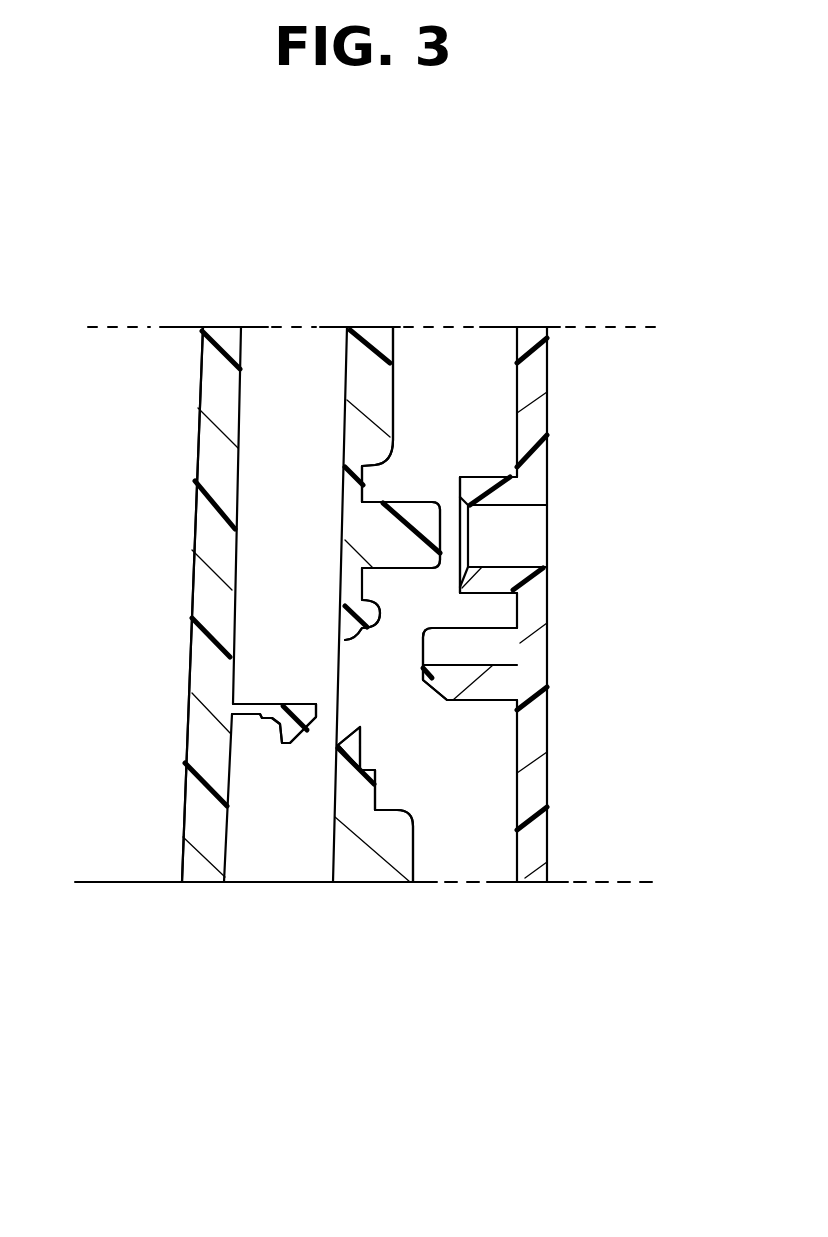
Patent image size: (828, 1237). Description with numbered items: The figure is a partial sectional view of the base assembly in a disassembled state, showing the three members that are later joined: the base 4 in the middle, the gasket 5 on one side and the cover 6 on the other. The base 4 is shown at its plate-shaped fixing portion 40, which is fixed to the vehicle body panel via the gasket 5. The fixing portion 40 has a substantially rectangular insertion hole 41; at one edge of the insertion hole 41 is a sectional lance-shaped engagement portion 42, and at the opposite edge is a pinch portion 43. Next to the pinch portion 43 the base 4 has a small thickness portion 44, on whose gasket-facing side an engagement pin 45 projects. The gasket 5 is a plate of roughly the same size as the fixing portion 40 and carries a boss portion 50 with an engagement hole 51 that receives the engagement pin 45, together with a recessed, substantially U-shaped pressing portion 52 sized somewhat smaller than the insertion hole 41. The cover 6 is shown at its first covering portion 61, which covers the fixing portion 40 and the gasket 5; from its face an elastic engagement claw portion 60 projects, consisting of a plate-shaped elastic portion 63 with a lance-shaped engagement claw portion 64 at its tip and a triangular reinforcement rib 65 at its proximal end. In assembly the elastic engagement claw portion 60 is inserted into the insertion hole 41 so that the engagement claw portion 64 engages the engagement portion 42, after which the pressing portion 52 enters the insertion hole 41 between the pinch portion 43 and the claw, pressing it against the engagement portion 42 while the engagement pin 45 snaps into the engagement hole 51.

The base 4 is at (377, 327).
The gasket 5 is at (537, 327).
The cover 6 is at (222, 327).
The fixing portion 40 is at (345, 357).
The insertion hole 41 is at (348, 727).
The engagement portion 42 is at (363, 748).
The pinch portion 43 is at (342, 640).
The small thickness portion 44 is at (365, 490).
The engagement pin 45 is at (418, 517).
The boss portion 50 is at (475, 487).
The engagement hole 51 is at (512, 508).
The pressing portion 52 is at (490, 700).
The elastic engagement claw portion 60 is at (277, 876).
The first covering portion 61 is at (198, 377).
The elastic portion 63 is at (250, 718).
The engagement claw portion 64 is at (288, 745).
The reinforcement rib 65 is at (245, 703).